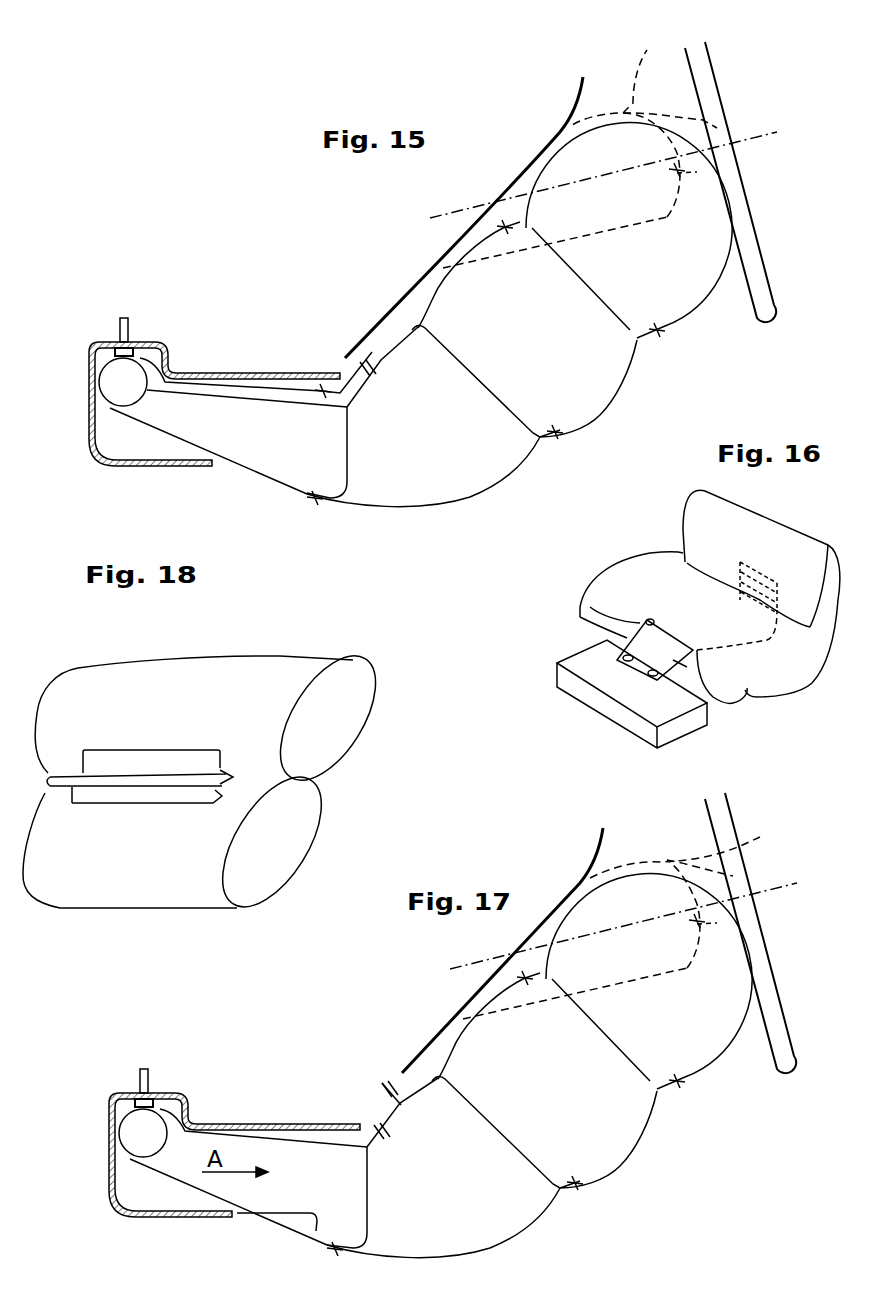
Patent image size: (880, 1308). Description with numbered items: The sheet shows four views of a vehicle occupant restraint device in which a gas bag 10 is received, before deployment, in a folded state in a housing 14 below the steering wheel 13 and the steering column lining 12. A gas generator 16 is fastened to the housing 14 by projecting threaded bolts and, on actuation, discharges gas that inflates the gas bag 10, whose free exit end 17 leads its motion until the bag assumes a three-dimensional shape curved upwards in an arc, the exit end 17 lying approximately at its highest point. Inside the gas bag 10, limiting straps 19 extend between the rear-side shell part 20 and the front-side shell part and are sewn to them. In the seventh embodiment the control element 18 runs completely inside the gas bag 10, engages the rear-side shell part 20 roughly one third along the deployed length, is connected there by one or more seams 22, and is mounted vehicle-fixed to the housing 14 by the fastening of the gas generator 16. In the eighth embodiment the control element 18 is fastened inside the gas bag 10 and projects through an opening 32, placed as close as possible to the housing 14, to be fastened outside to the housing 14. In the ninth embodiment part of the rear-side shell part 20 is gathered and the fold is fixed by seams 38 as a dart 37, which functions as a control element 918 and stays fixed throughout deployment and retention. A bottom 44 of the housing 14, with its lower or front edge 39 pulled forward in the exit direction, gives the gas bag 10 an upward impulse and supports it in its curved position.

In FIG. 16, the gas bag 10 is at (773, 667).
In FIG. 18, the gas bag 10 is at (350, 680).
In FIG. 15, the steering column lining 12 is at (580, 152).
In FIG. 17, the steering column lining 12 is at (622, 911).
In FIG. 15, the steering wheel 13 is at (713, 97).
In FIG. 17, the steering wheel 13 is at (773, 933).
In FIG. 15, the housing 14 is at (167, 358).
In FIG. 16, the housing 14 is at (600, 663).
In FIG. 17, the housing 14 is at (234, 1125).
In FIG. 15, the gas generator 16 is at (115, 382).
In FIG. 17, the gas generator 16 is at (112, 1121).
In FIG. 15, the free exit end 17 is at (713, 173).
In FIG. 17, the free exit end 17 is at (634, 926).
In FIG. 15, the control element 18 is at (278, 393).
In FIG. 16, the control element 18 is at (713, 637).
In FIG. 17, the control element 18 is at (263, 1128).
In FIG. 15, the limiting straps 19 is at (348, 455).
In FIG. 17, the limiting straps 19 is at (441, 1066).
In FIG. 18, the rear-side shell part 20 is at (213, 683).
In FIG. 15, the seam 22 is at (372, 383).
In FIG. 16, the opening 32 is at (633, 620).
In FIG. 18, the dart 37 is at (151, 741).
In FIG. 17, the dart 37 is at (344, 1059).
In FIG. 18, the seams 38 is at (127, 790).
In FIG. 17, the seams 38 is at (357, 1102).
In FIG. 17, the lower edge 39 is at (320, 1256).
In FIG. 17, the bottom 44 is at (221, 1243).
In FIG. 18, the control element 918 is at (167, 780).
In FIG. 17, the control element 918 is at (344, 1059).